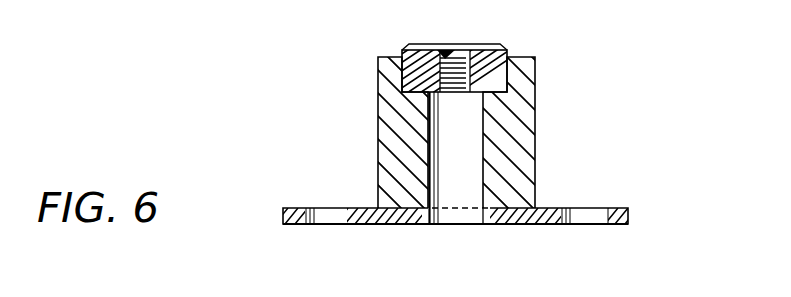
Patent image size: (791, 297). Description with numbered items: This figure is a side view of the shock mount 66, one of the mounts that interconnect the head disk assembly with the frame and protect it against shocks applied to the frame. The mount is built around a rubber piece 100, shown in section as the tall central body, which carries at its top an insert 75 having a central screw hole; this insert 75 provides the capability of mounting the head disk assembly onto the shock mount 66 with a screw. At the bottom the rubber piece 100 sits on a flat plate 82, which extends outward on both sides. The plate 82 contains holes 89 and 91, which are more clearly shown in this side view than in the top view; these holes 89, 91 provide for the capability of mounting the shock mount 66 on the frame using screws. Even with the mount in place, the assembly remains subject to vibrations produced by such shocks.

The shock mount 66 is at (566, 120).
The insert 75 is at (491, 72).
The plate 82 is at (551, 208).
The hole 89 is at (345, 210).
The hole 91 is at (600, 209).
The rubber piece 100 is at (380, 102).